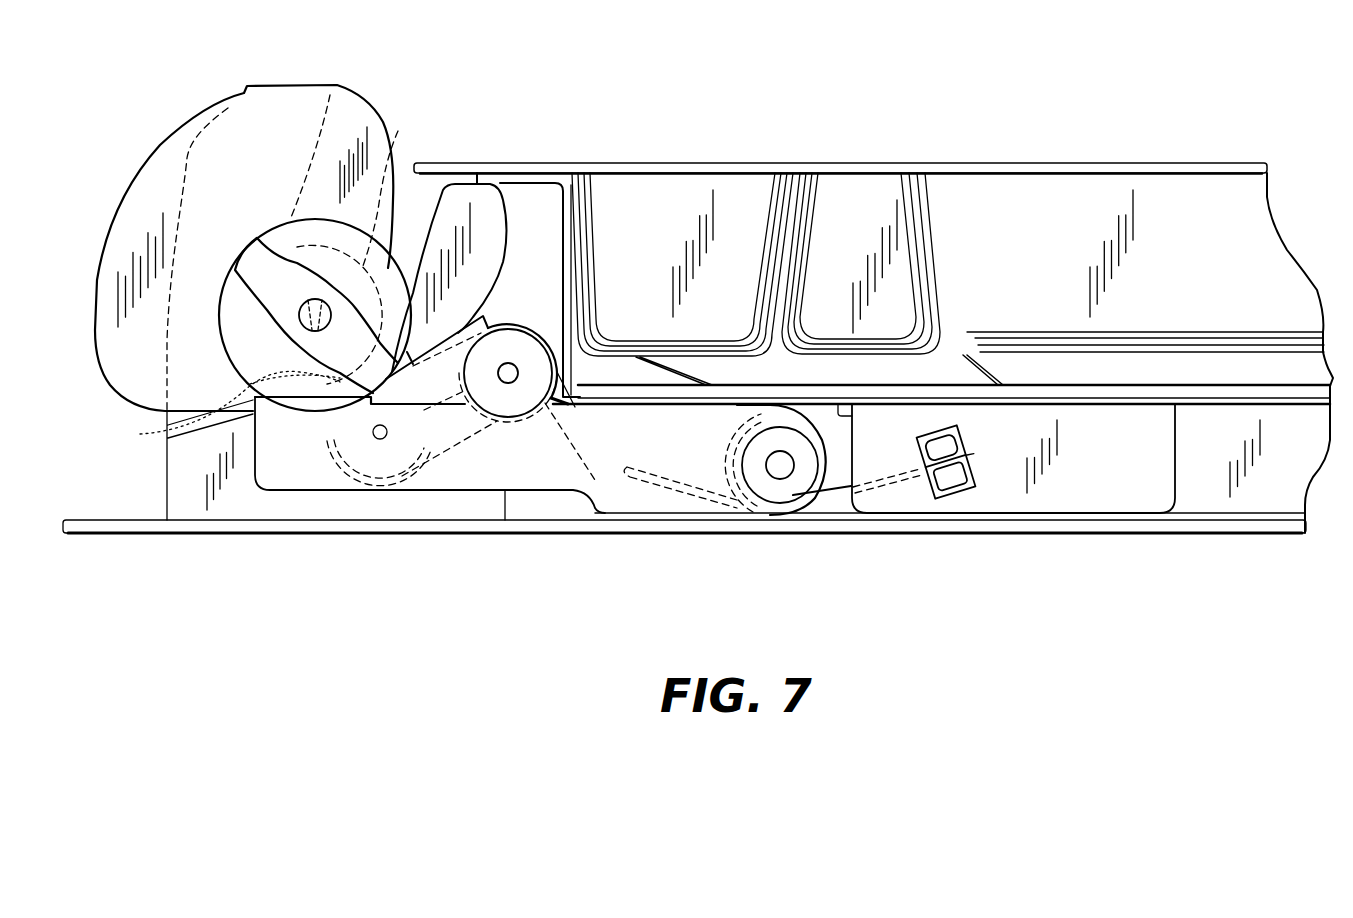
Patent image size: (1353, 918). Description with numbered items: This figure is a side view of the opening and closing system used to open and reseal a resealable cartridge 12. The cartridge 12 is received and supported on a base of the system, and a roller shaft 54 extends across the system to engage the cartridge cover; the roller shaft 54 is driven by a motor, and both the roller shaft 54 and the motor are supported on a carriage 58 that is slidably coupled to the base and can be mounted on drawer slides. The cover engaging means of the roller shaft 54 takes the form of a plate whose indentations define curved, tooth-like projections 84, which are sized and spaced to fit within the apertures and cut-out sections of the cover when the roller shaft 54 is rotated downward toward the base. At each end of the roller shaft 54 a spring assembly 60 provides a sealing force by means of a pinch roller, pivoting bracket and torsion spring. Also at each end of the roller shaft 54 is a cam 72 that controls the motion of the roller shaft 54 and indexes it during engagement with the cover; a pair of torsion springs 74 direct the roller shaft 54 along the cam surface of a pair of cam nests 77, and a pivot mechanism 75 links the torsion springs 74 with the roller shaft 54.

The resealable cartridge 12 is at (697, 160).
The roller shaft 54 is at (398, 131).
The carriage 58 is at (1002, 513).
The spring assembly 60 is at (462, 457).
The cam 72 is at (132, 196).
The torsion springs 74 is at (837, 497).
The pivot mechanism 75 is at (765, 468).
The cam nests 77 is at (190, 117).
The tooth-like projections 84 is at (220, 410).